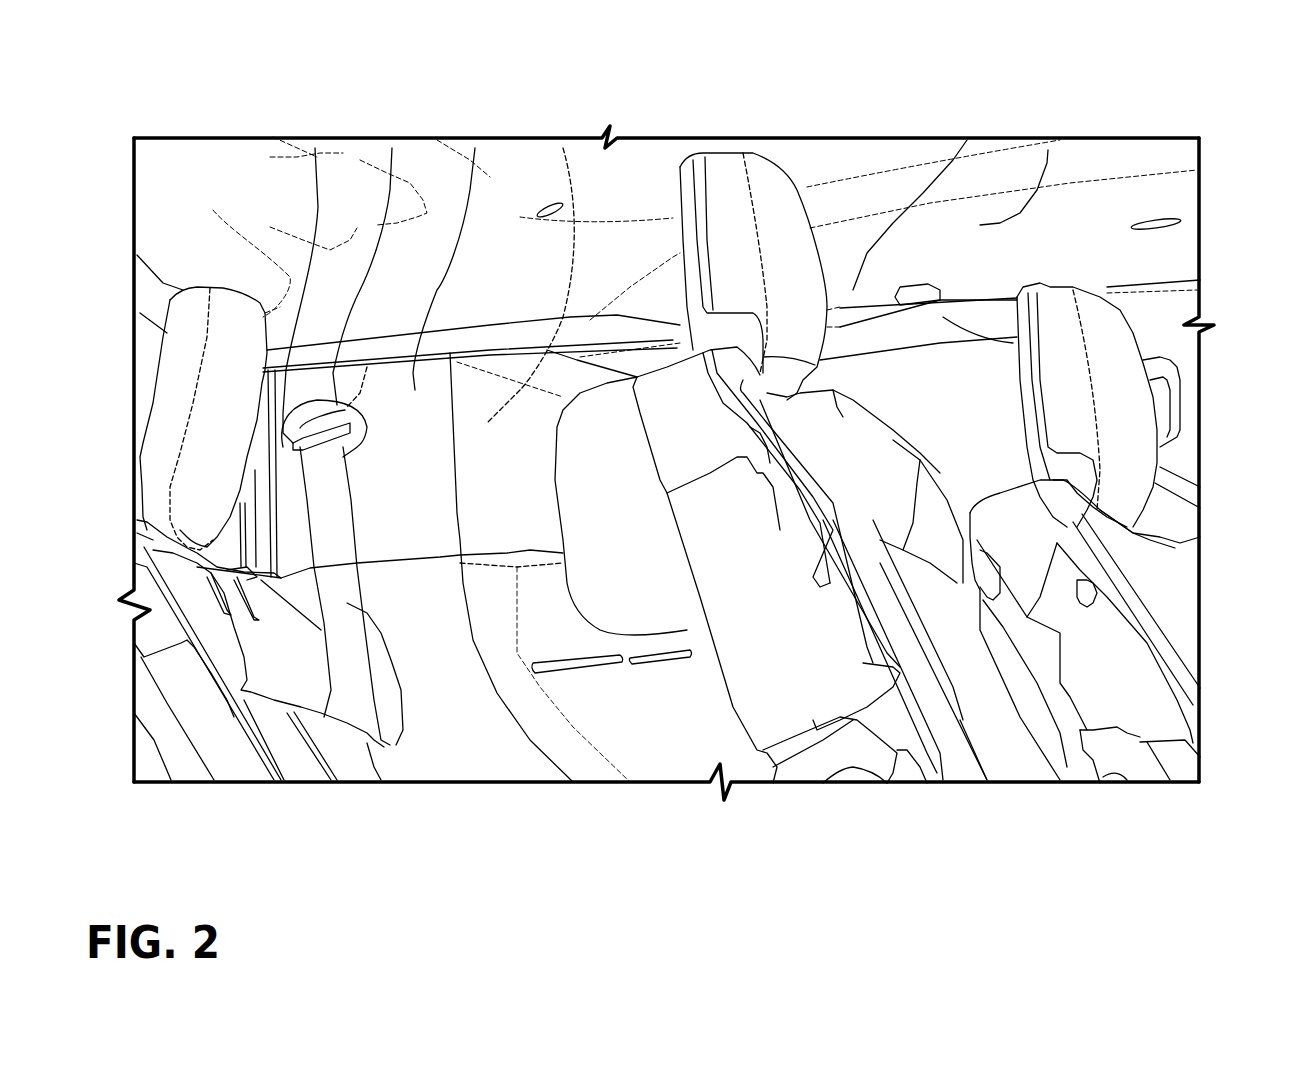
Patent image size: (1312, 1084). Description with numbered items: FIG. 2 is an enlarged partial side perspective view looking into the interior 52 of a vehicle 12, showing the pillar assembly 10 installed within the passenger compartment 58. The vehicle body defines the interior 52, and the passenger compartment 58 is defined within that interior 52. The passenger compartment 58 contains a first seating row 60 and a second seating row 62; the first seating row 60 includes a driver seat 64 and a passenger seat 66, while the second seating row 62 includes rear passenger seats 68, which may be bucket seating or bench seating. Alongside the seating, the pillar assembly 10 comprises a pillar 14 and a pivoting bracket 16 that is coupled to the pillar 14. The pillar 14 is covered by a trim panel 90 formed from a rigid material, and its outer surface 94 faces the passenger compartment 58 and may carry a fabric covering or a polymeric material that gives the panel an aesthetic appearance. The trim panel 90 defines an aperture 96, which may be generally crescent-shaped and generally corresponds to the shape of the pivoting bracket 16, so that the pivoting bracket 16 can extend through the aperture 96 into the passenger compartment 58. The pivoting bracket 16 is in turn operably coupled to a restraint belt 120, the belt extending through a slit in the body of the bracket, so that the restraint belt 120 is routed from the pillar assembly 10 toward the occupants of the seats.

The pillar assembly 10 is at (483, 471).
The vehicle 12 is at (250, 101).
The pillar 14 is at (563, 148).
The pivoting bracket 16 is at (315, 148).
The interior 52 is at (1048, 150).
The passenger compartment 58 is at (967, 140).
The first seating row 60 is at (1155, 578).
The second seating row 62 is at (341, 742).
The driver seat 64 is at (1120, 393).
The passenger seat 66 is at (780, 657).
The rear passenger seat 68 is at (133, 523).
The trim panel 90 is at (475, 148).
The outer surface 94 is at (388, 494).
The aperture 96 is at (392, 148).
The restraint belt 120 is at (405, 645).